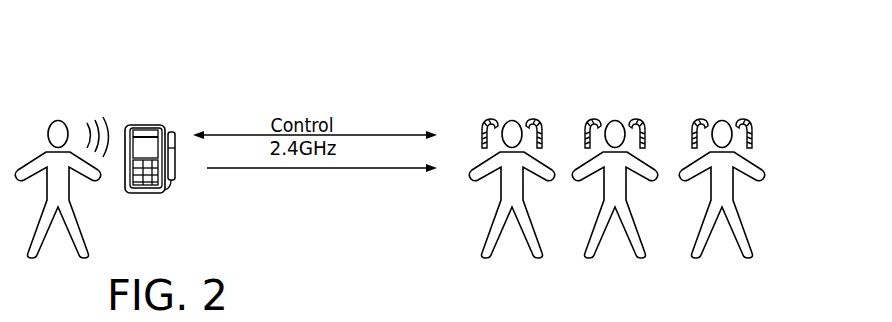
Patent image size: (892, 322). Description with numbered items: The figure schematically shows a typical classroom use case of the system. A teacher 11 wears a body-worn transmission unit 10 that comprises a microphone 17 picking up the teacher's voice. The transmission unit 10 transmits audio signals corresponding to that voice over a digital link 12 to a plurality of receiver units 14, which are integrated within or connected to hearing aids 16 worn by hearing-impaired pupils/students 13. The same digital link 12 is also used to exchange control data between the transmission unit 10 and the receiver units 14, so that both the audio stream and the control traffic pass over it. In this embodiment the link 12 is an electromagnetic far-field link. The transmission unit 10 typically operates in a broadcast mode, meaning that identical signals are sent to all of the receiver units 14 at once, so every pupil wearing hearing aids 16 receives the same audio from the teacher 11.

The transmission unit 10 is at (143, 124).
The teacher 11 is at (59, 117).
The digital link 12 is at (318, 196).
The hearing-impaired pupils/students 13 is at (515, 118).
The receiver units 14 is at (471, 151).
The hearing aids 16 is at (493, 118).
The microphone 17 is at (173, 132).